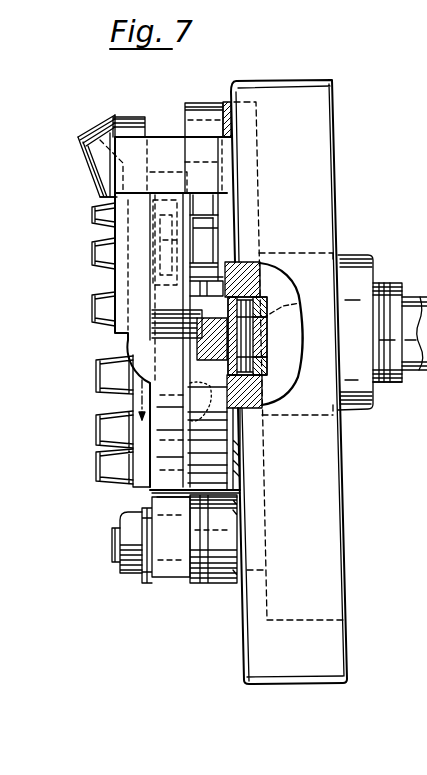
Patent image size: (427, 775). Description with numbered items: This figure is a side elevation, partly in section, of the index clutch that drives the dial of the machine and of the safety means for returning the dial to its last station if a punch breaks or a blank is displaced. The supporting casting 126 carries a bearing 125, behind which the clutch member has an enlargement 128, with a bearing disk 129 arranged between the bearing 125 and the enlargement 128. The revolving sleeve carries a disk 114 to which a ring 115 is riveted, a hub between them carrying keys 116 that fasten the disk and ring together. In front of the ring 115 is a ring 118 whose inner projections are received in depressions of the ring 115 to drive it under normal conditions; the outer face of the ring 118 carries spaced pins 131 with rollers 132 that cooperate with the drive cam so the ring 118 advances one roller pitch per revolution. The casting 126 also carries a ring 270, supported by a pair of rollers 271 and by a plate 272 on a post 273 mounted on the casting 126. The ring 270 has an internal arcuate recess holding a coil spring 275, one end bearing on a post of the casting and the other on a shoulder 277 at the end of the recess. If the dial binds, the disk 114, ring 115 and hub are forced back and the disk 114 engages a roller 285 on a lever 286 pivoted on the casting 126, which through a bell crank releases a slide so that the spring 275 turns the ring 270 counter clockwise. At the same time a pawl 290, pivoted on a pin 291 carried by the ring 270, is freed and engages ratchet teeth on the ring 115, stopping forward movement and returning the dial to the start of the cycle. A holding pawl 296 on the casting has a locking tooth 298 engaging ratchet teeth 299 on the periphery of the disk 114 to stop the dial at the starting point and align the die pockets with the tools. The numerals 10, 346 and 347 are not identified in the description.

The shaft 10 is at (416, 297).
The disk 114 is at (242, 454).
The ring 115 is at (152, 493).
The keys 116 is at (180, 508).
The ring 118 is at (137, 398).
The bearing 125 is at (352, 258).
The supporting casting 126 is at (313, 80).
The enlargement 128 is at (388, 285).
The bearing disk 129 is at (383, 387).
The pins 131 is at (90, 217).
The rollers 132 is at (102, 226).
The ring 270 is at (118, 337).
The rollers 271 is at (167, 580).
The plate 272 is at (110, 163).
The lug or post 273 is at (165, 135).
The coil spring 275 is at (262, 428).
The shoulder 277 is at (266, 362).
The roller 285 is at (293, 301).
The lever 286 is at (267, 330).
The pawl 290 is at (163, 252).
The pin 291 is at (92, 308).
The holding pawl 296 is at (207, 102).
The locking tooth 298 is at (220, 197).
The ratchet teeth 299 is at (210, 240).
The wedge tip 346 is at (78, 137).
The wedge upper part 347 is at (97, 126).